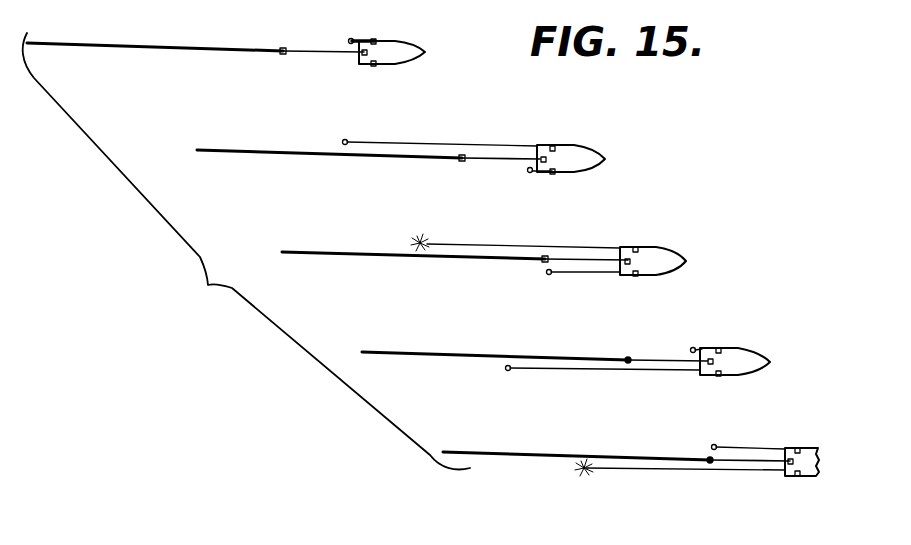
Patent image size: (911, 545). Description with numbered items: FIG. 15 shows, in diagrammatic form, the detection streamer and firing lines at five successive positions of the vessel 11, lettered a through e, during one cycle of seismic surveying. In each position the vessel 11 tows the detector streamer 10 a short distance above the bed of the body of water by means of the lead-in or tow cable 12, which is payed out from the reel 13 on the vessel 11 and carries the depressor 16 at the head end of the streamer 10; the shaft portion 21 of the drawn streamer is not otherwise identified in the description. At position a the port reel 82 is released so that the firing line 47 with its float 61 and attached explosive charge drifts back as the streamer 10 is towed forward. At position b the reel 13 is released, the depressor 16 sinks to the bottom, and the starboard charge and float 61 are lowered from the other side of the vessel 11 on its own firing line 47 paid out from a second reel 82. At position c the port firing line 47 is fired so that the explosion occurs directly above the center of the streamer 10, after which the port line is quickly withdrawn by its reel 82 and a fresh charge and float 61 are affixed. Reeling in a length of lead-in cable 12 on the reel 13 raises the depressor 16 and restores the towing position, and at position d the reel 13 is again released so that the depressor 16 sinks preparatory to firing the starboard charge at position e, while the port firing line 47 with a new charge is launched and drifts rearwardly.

The detector streamer 10 is at (181, 38).
The rod shaft 21 is at (68, 47).
The lead-in or tow cable 12 is at (316, 50).
The depressor 16 is at (283, 55).
The metallic float 61 is at (350, 39).
The firing line 47 is at (363, 39).
The reel 82 is at (375, 40).
The vessel 11 is at (412, 38).
The reel 13 is at (360, 60).